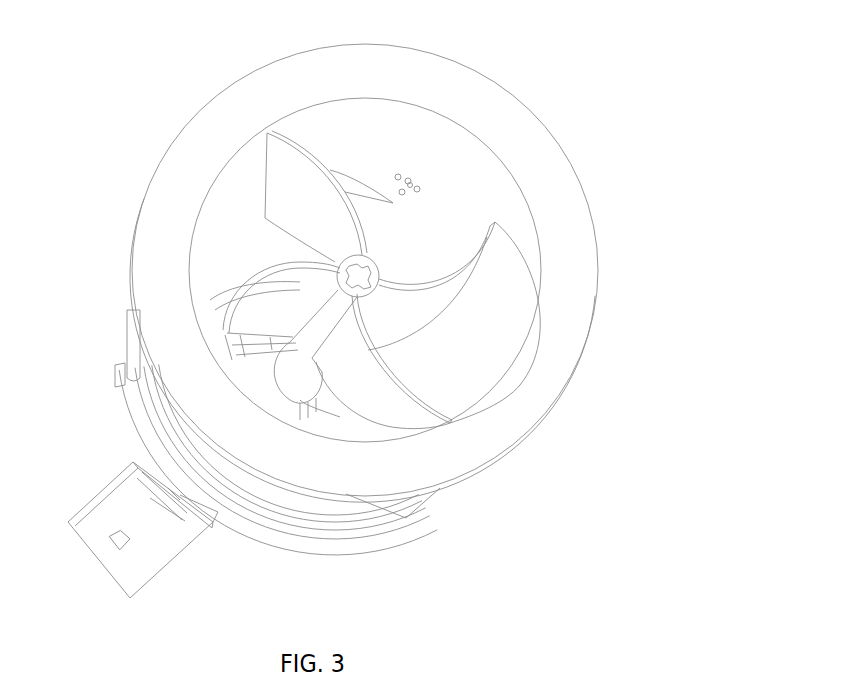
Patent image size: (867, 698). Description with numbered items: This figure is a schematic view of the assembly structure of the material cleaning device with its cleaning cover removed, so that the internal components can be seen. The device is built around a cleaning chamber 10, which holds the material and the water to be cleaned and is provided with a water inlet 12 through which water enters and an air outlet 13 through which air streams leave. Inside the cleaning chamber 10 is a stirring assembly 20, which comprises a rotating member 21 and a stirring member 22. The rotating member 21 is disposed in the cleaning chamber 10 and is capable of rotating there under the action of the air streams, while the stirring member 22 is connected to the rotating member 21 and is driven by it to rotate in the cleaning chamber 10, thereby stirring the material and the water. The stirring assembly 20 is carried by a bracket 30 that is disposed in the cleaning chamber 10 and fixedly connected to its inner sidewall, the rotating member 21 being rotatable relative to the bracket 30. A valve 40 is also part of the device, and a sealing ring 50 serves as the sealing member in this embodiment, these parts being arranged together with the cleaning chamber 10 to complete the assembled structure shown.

The cleaning chamber 10 is at (215, 427).
The water inlet 12 is at (352, 190).
The air outlet 13 is at (412, 181).
The stirring assembly 20 is at (158, 348).
The rotating member 21 is at (247, 285).
The stirring member 22 is at (247, 357).
The bracket 30 is at (288, 367).
The valve 40 is at (302, 547).
The sealing ring 50 is at (342, 528).